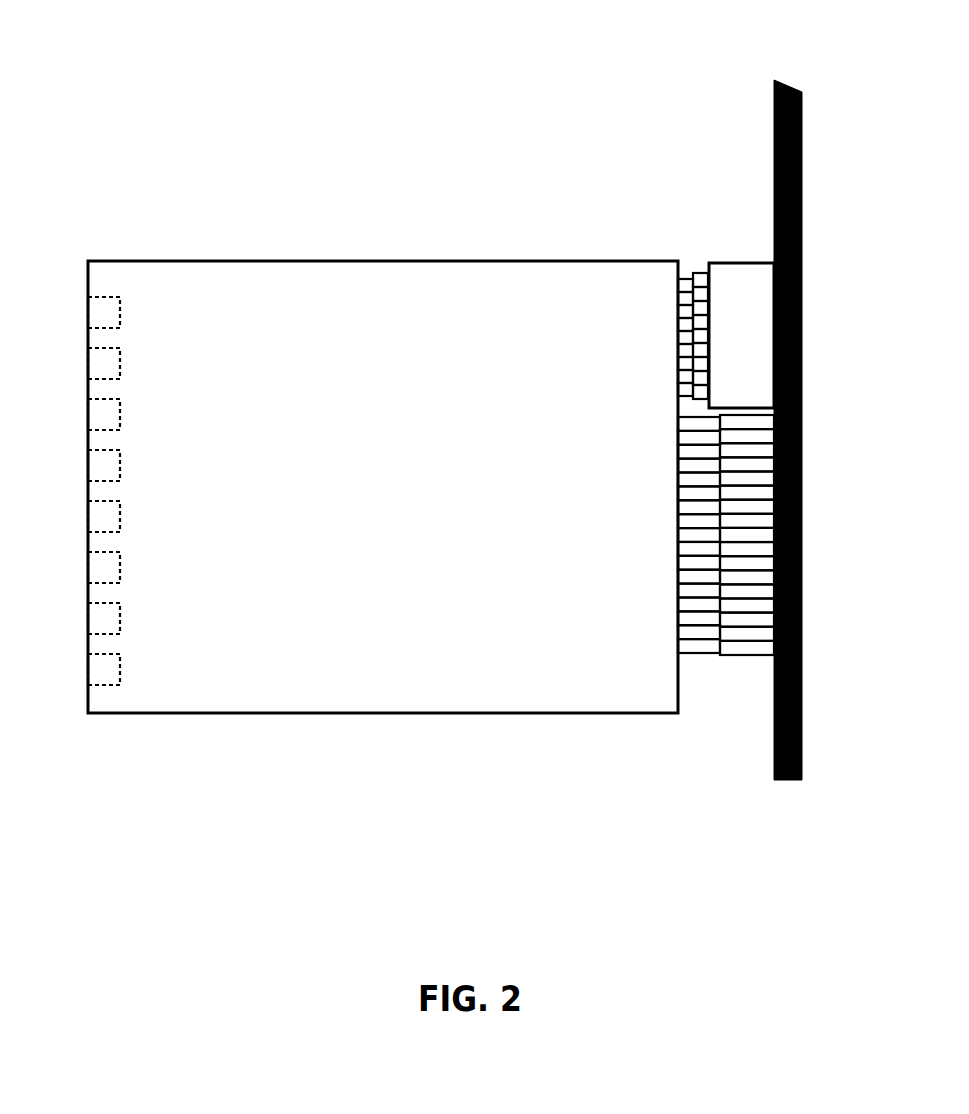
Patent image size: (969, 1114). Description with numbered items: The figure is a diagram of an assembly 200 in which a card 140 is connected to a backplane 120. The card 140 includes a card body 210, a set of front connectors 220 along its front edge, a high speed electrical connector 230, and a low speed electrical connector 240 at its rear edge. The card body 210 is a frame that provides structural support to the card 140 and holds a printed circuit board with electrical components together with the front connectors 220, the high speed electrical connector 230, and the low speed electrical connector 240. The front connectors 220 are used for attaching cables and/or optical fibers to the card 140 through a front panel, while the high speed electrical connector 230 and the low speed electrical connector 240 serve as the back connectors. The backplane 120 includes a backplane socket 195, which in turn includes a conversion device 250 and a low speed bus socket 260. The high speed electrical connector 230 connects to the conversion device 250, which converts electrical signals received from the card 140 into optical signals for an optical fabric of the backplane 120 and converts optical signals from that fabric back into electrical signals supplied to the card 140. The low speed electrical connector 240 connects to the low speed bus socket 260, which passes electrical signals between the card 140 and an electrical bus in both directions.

The assembly 200 is at (148, 71).
The card 140 is at (70, 714).
The card body 210 is at (365, 261).
The front connectors 220 is at (98, 348).
The high speed electrical connector 230 is at (680, 323).
The low speed electrical connector 240 is at (678, 595).
The conversion device 250 is at (733, 263).
The low speed bus socket 260 is at (760, 656).
The backplane 120 is at (803, 210).
The backplane socket 195 is at (802, 648).